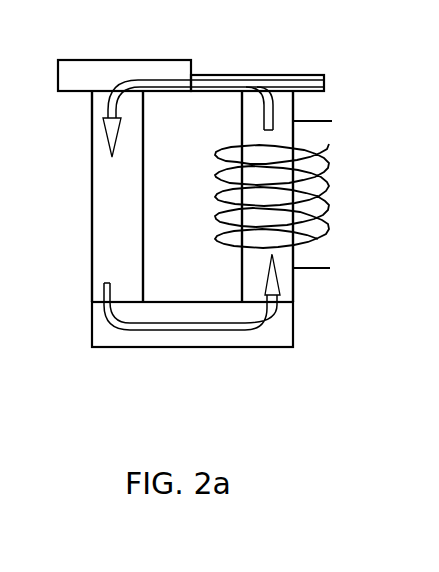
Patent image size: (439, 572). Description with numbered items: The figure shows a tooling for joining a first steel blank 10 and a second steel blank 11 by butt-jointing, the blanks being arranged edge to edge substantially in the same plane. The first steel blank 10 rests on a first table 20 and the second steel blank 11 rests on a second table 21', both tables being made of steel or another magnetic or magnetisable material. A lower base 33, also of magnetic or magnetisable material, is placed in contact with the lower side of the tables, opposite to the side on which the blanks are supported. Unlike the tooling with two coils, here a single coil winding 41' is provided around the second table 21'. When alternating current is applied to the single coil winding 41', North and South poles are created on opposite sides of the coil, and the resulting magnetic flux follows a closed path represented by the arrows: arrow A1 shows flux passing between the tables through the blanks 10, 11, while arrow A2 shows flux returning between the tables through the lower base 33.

The first steel blank 10 is at (89, 78).
The second steel blank 11 is at (312, 83).
The first table 20 is at (92, 226).
The second table 21' is at (318, 196).
The lower base 33 is at (268, 330).
The single coil winding 41' is at (308, 196).
The arrow representing magnetic flux path through the blanks A1 is at (200, 77).
The arrow representing magnetic flux path through the lower base A2 is at (150, 345).